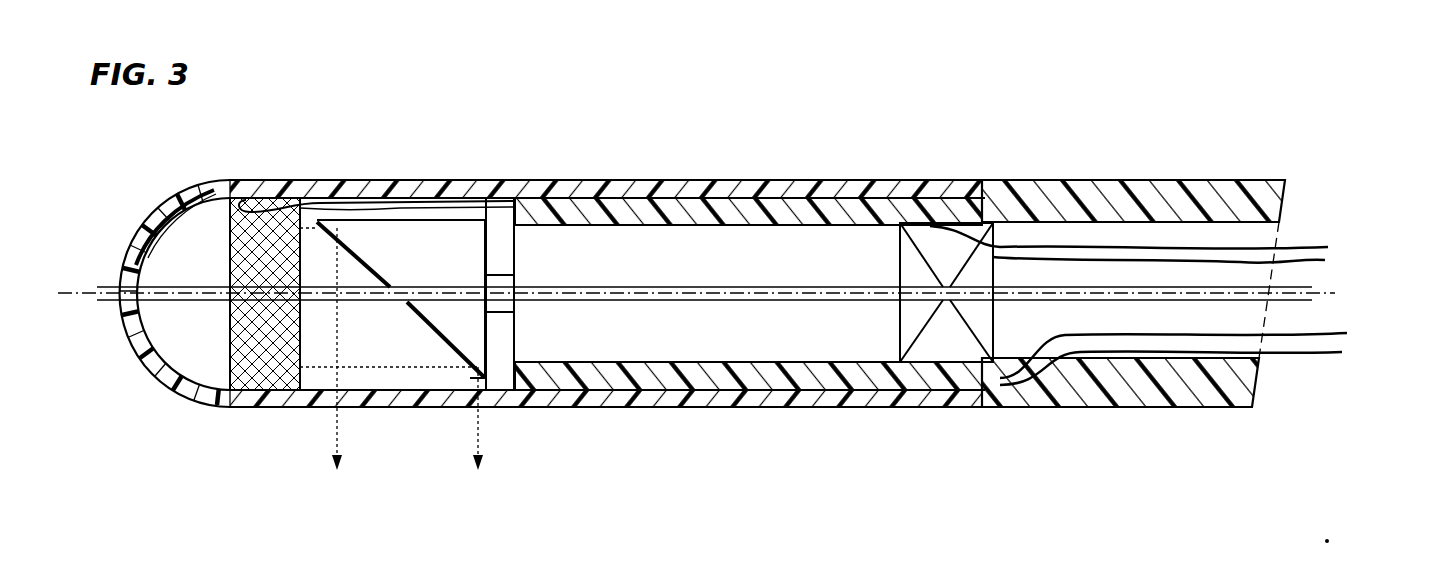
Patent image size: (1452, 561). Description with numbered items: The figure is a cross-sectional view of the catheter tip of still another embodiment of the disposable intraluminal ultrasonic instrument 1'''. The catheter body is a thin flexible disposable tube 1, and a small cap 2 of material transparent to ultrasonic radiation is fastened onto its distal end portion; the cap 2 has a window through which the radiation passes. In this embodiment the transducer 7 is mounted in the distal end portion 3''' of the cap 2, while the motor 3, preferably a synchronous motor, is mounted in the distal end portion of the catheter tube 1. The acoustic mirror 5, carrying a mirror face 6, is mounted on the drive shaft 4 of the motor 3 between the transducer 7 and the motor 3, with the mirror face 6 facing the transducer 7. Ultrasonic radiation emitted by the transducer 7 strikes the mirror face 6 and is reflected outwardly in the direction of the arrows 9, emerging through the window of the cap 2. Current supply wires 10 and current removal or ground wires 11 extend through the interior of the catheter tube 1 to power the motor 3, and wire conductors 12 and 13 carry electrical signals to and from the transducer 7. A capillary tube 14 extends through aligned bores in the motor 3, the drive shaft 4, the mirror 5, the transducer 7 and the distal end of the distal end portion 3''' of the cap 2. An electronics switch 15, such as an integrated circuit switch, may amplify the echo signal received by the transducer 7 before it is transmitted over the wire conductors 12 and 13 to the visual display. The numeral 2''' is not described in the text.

The catheter tube 1 is at (1133, 258).
The disposable intraluminal ultrasonic instrument 1''' is at (931, 64).
The cap 2 is at (607, 274).
The inner tube 2''' is at (748, 247).
The motor 3 is at (748, 293).
The distal end portion of the cap 3''' is at (175, 345).
The drive shaft 4 is at (500, 312).
The mirror 5 is at (421, 262).
The mirror face 6 is at (407, 305).
The transducer 7 is at (263, 230).
The arrows 9 is at (337, 428).
The current supply wires 10 is at (1335, 333).
The current removal wires 11 is at (1335, 352).
The wire conductor 12 is at (465, 203).
The wire conductor 13 is at (489, 210).
The capillary tube 14 is at (1283, 303).
The electronics switch 15 is at (957, 343).